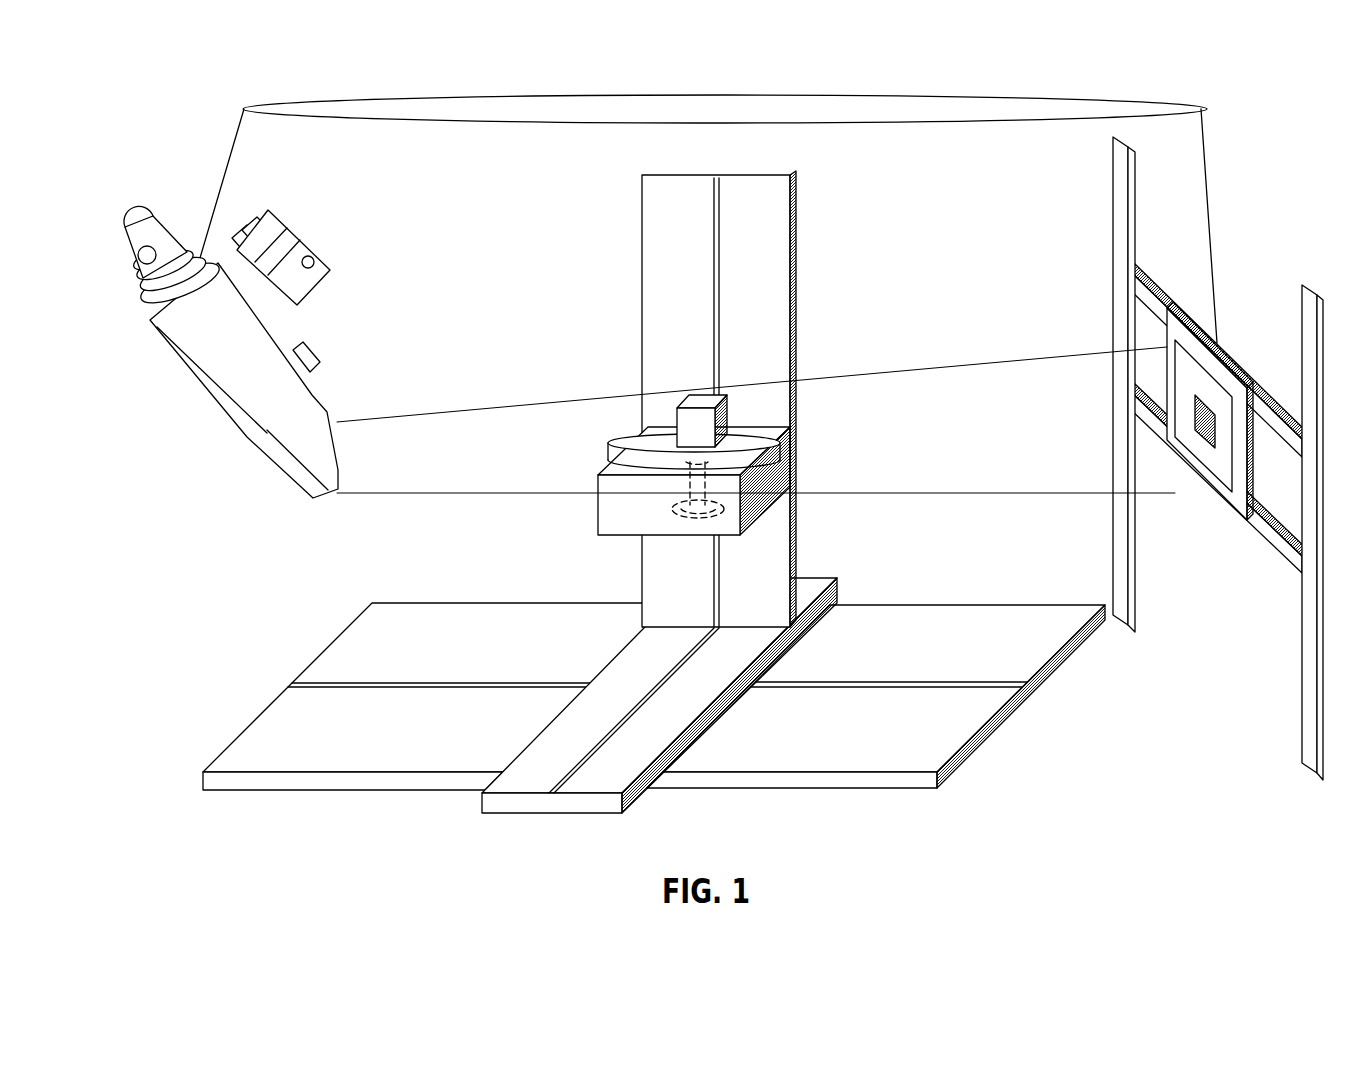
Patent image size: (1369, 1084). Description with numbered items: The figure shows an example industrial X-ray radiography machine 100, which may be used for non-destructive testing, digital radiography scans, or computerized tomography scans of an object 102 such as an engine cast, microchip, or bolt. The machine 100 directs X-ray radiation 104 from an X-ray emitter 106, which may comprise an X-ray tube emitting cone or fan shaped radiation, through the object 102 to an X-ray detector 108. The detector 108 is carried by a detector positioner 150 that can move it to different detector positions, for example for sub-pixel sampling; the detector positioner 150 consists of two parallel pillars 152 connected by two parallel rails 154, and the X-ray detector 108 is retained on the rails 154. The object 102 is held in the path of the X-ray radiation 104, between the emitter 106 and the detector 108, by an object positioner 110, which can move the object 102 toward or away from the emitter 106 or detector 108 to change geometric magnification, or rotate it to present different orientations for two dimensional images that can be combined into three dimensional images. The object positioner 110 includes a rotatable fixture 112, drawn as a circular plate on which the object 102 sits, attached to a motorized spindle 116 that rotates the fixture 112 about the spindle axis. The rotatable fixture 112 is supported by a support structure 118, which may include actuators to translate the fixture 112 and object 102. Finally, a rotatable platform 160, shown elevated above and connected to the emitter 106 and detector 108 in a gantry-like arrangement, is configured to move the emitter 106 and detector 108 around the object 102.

The industrial X-ray radiography machine 100 is at (215, 305).
The object 102 is at (705, 392).
The X-ray radiation 104 is at (916, 343).
The X-ray emitter 106 is at (318, 227).
The X-ray detector 108 is at (1239, 335).
The object positioner 110 is at (654, 514).
The rotatable fixture 112 is at (782, 449).
The motorized spindle 116 is at (728, 508).
The support structure 118 is at (633, 276).
The detector positioner 150 is at (1171, 458).
The pillars 152 is at (1108, 578).
The rails 154 is at (1159, 284).
The rotatable platform 160 is at (722, 126).